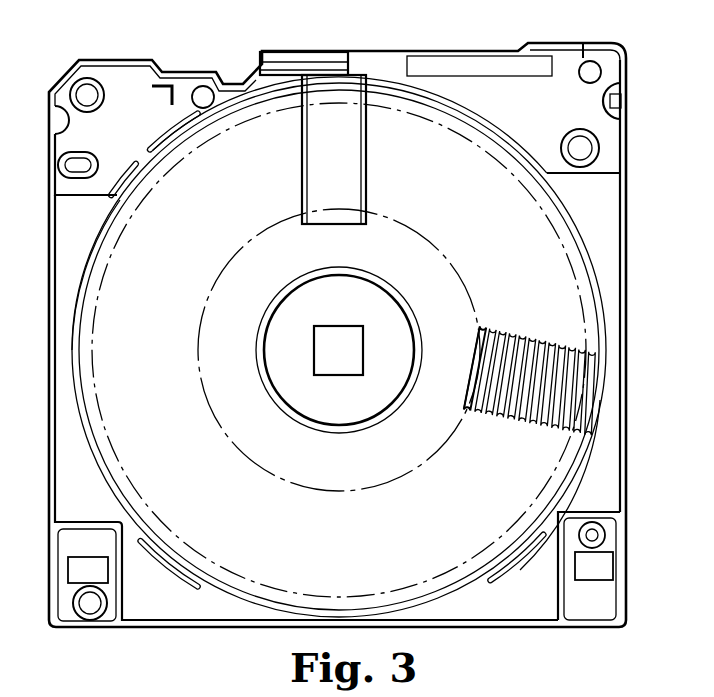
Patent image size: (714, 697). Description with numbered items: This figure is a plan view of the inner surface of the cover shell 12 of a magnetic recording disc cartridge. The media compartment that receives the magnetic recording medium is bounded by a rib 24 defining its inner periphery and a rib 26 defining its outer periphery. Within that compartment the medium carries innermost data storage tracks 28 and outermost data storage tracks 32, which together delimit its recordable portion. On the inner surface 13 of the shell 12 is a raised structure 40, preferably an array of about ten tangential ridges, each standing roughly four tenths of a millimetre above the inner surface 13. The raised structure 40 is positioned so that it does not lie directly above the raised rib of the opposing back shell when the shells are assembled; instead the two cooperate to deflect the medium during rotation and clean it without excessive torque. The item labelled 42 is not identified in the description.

The cover shell 12 is at (187, 72).
The inner surface 13 is at (494, 218).
The rib 24 is at (411, 308).
The rib 26 is at (98, 466).
The innermost data storage tracks 28 is at (482, 320).
The outermost data storage tracks 32 is at (555, 477).
The raised structure 40 is at (547, 416).
The spring coil 42 is at (573, 378).